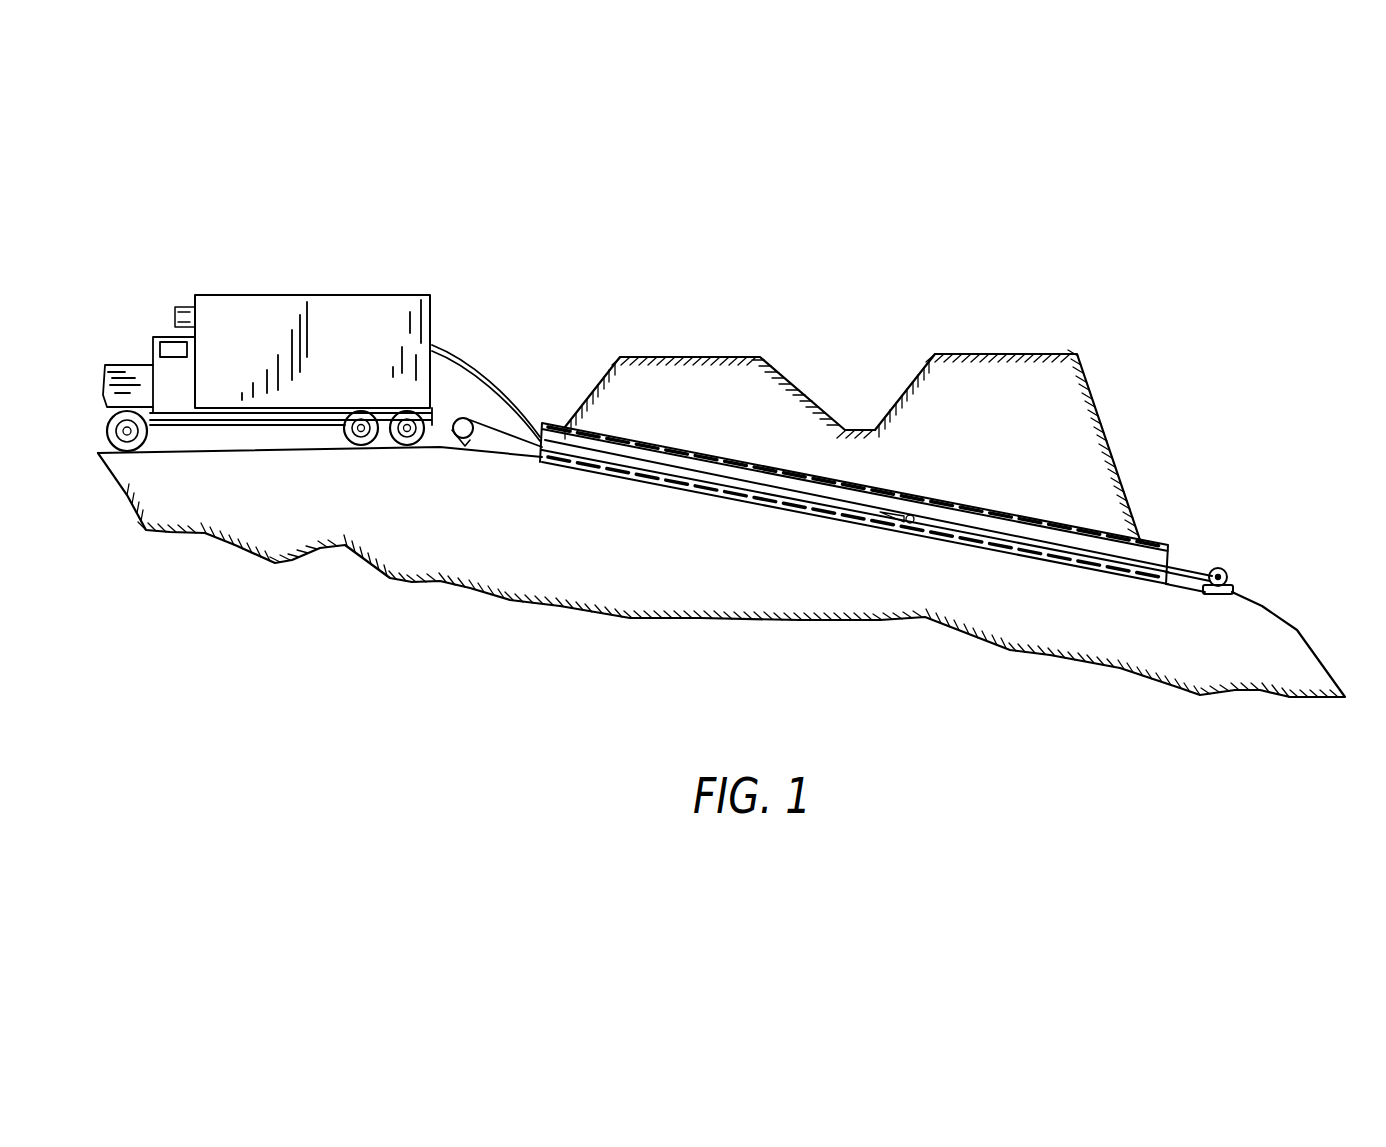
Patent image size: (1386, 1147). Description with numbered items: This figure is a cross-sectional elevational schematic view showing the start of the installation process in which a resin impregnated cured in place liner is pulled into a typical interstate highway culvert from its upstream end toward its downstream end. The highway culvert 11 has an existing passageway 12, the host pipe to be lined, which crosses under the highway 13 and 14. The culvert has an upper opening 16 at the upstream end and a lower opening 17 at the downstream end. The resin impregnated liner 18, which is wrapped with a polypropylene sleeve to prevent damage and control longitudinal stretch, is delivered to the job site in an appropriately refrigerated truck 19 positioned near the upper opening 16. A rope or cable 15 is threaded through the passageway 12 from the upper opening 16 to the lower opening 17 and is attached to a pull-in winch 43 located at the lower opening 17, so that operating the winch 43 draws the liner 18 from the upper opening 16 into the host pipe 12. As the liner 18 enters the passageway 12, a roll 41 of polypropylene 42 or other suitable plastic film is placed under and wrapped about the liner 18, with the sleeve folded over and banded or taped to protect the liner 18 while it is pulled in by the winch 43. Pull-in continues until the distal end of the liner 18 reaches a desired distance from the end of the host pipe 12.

The highway culvert 11 is at (1148, 378).
The passageway 12 is at (915, 490).
The highway 13 is at (716, 350).
The highway 14 is at (1008, 338).
The cable 15 is at (1188, 572).
The upper opening 16 is at (545, 400).
The lower opening 17 is at (1160, 497).
The liner 18 is at (488, 402).
The refrigerated truck 19 is at (366, 363).
The roll 41 is at (462, 445).
The polypropylene 42 is at (512, 452).
The winch 43 is at (1232, 580).